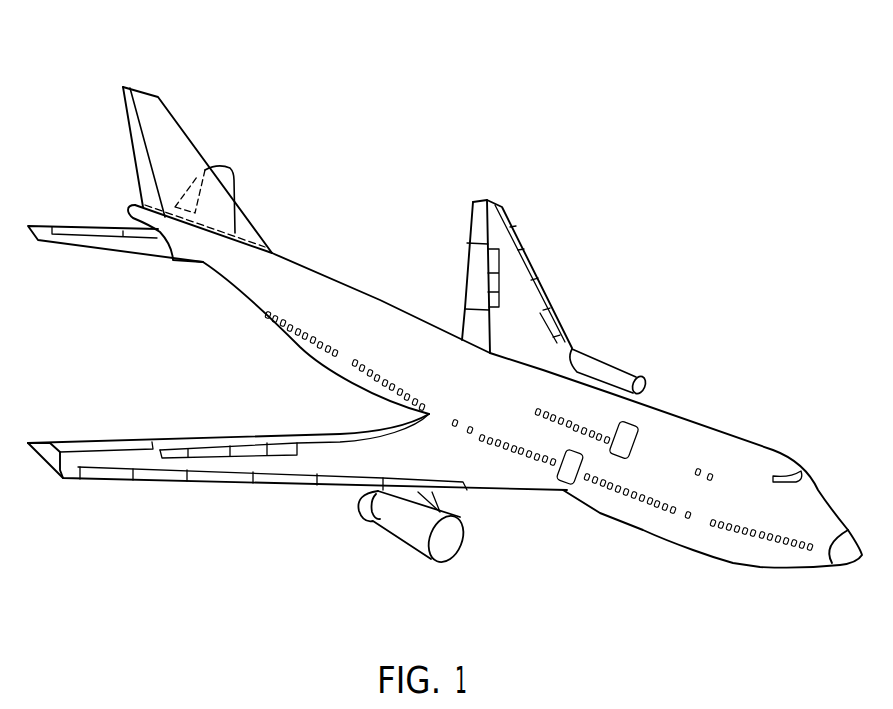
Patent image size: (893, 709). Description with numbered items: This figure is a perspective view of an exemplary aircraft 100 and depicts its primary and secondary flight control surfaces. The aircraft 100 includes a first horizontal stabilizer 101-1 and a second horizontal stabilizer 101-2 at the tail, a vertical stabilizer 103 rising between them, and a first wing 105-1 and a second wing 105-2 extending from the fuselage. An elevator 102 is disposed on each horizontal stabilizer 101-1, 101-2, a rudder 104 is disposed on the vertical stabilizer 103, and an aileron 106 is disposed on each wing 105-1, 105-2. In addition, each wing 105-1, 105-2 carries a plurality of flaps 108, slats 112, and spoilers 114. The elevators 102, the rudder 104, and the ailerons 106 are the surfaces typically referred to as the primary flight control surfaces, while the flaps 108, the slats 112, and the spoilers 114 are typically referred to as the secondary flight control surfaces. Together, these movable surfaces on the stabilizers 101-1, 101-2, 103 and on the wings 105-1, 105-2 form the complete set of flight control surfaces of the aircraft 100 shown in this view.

The aircraft 100 is at (595, 137).
The first horizontal stabilizer 101-1 is at (105, 252).
The second horizontal stabilizer 101-2 is at (235, 188).
The elevator 102 is at (187, 188).
The vertical stabilizer 103 is at (185, 130).
The rudder 104 is at (132, 130).
The first wing 105-1 is at (490, 478).
The second wing 105-2 is at (567, 363).
The aileron 106 is at (105, 443).
The flaps 108 is at (332, 435).
The slats 112 is at (343, 484).
The spoilers 114 is at (212, 455).